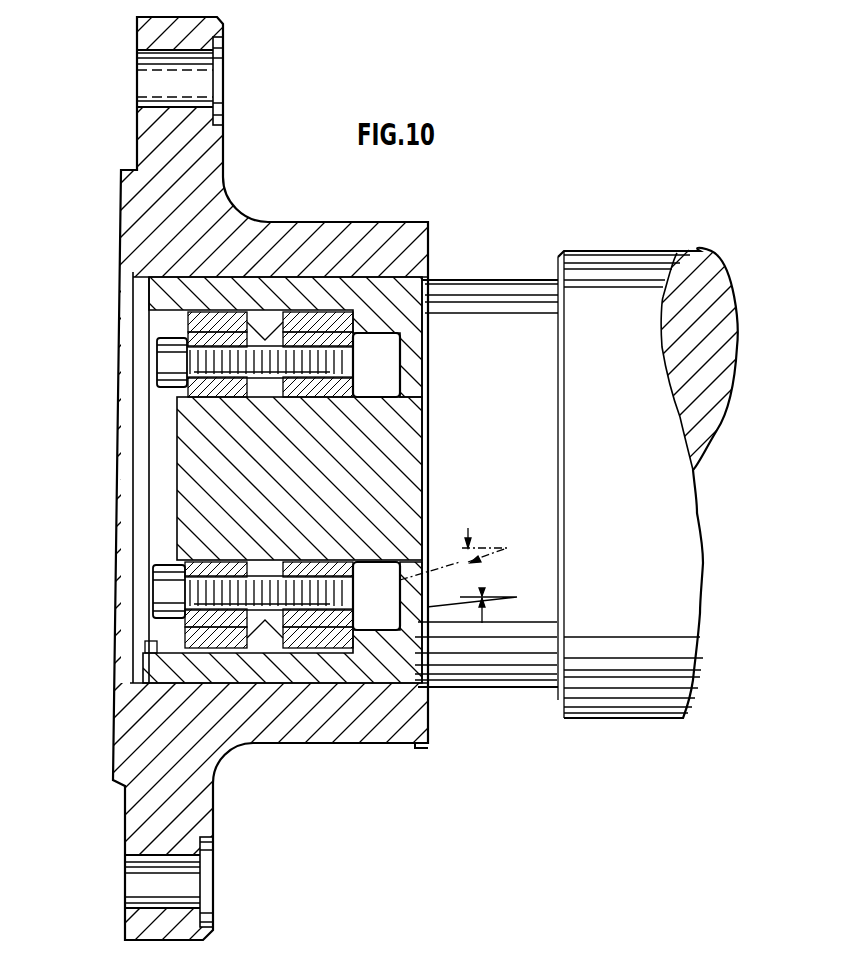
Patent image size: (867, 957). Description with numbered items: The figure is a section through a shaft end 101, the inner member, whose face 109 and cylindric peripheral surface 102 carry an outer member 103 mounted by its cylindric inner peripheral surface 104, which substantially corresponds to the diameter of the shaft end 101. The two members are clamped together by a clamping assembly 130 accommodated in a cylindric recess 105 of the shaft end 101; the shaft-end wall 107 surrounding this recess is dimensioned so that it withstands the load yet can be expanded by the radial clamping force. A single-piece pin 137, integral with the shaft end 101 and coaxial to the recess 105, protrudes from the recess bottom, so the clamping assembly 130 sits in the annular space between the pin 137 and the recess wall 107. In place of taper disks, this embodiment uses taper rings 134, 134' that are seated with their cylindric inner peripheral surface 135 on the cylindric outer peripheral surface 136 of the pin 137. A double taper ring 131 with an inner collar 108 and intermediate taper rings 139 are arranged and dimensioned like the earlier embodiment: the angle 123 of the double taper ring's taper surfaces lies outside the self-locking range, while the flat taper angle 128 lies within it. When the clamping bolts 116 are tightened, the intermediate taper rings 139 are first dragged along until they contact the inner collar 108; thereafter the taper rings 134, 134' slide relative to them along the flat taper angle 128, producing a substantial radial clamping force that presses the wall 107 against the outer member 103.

The shaft end 101 is at (528, 660).
The cylindric peripheral surface 102 is at (465, 690).
The outer member 103 is at (193, 810).
The cylindric inner peripheral surface 104 is at (137, 677).
The cylindric recess 105 is at (157, 653).
The shaft-end wall 107 is at (324, 675).
The inner collar 108 is at (285, 310).
The face 109 is at (137, 680).
The clamping bolts 116 is at (167, 595).
The angle 123 is at (470, 530).
The flat taper angle 128 is at (483, 587).
The clamping assembly 130 is at (100, 361).
The double taper ring 131 is at (293, 308).
The taper ring 134 is at (212, 454).
The taper ring 134' is at (375, 359).
The cylindric inner peripheral surface 135 is at (218, 396).
The cylindric outer peripheral surface 136 is at (173, 570).
The pin 137 is at (190, 488).
The intermediate taper rings 139 is at (200, 322).